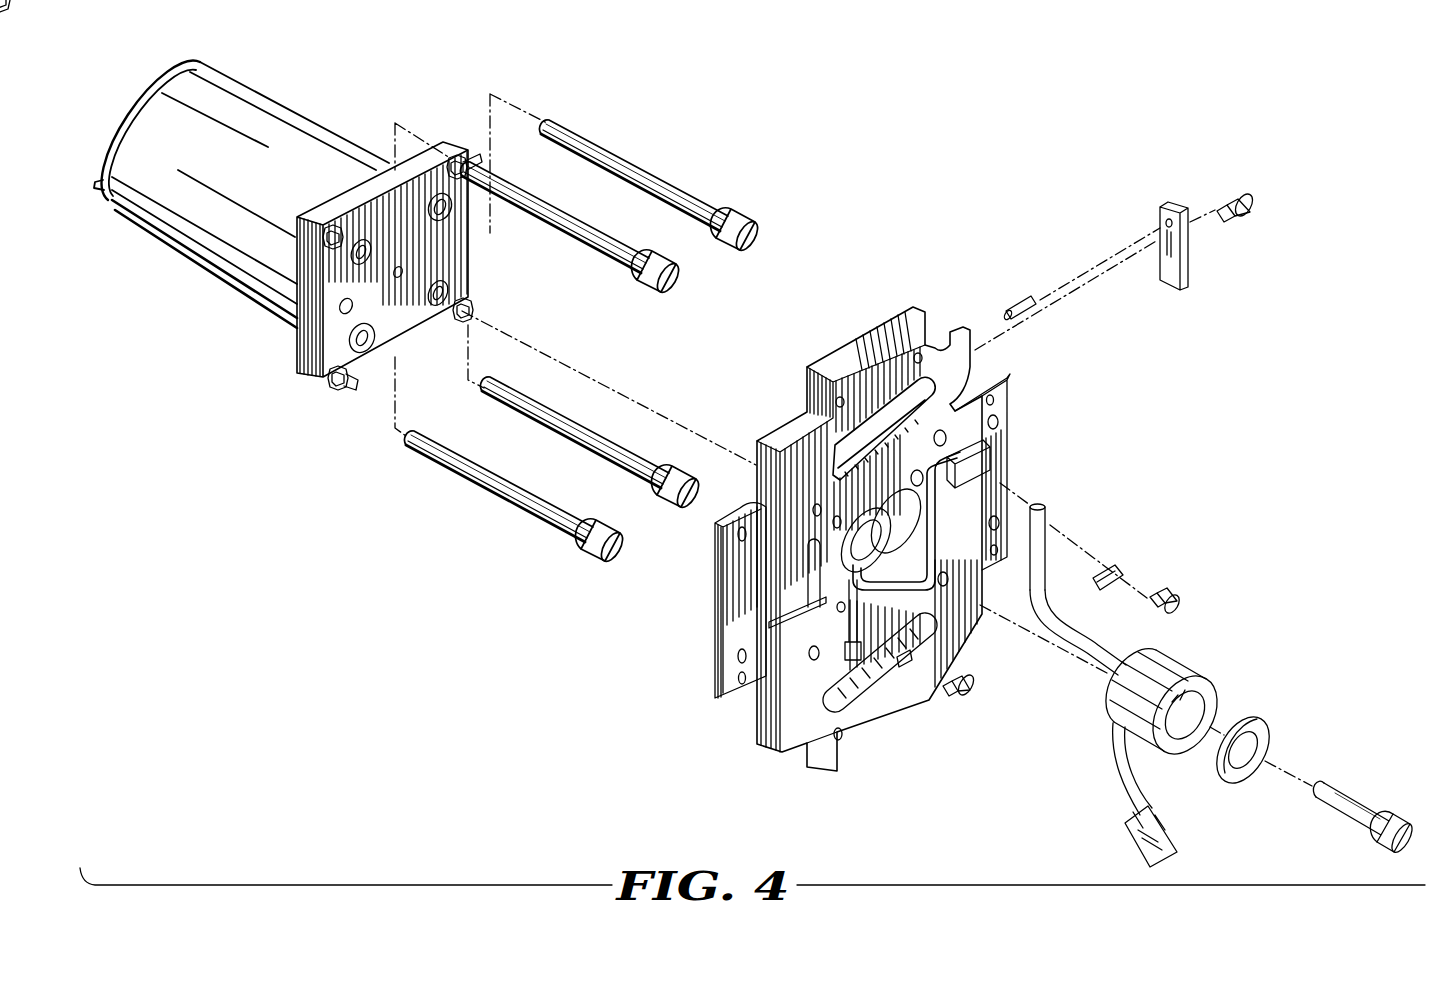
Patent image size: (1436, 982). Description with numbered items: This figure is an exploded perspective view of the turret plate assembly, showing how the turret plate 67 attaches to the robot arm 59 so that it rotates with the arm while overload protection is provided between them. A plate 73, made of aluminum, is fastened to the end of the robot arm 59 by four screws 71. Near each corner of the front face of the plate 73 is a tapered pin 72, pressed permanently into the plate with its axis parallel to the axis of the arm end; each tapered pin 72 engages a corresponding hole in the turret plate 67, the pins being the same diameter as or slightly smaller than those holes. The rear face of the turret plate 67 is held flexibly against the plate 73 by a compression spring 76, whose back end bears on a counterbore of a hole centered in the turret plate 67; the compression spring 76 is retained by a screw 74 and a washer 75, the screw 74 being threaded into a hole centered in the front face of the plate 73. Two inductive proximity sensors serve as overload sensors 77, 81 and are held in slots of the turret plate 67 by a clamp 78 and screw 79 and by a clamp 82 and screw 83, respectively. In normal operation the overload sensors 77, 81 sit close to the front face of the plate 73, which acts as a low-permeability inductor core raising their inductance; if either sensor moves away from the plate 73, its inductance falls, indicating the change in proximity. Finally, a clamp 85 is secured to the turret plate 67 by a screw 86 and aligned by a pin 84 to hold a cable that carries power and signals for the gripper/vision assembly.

The robot arm 59 is at (299, 116).
The plate 73 is at (295, 340).
The tapered pin 72 is at (341, 389).
The screws 71 is at (588, 186).
The turret plate 67 is at (893, 316).
The overload sensor 81 is at (847, 650).
The clamp 82 is at (897, 667).
The screw 83 is at (948, 700).
The pin 84 is at (1018, 300).
The clamp 85 is at (1160, 214).
The screw 86 is at (1230, 195).
The overload sensor 77 is at (1048, 512).
The clamp 78 is at (1122, 572).
The screw 79 is at (1180, 602).
The compression spring 76 is at (1170, 752).
The washer 75 is at (1243, 788).
The screw 74 is at (1378, 810).